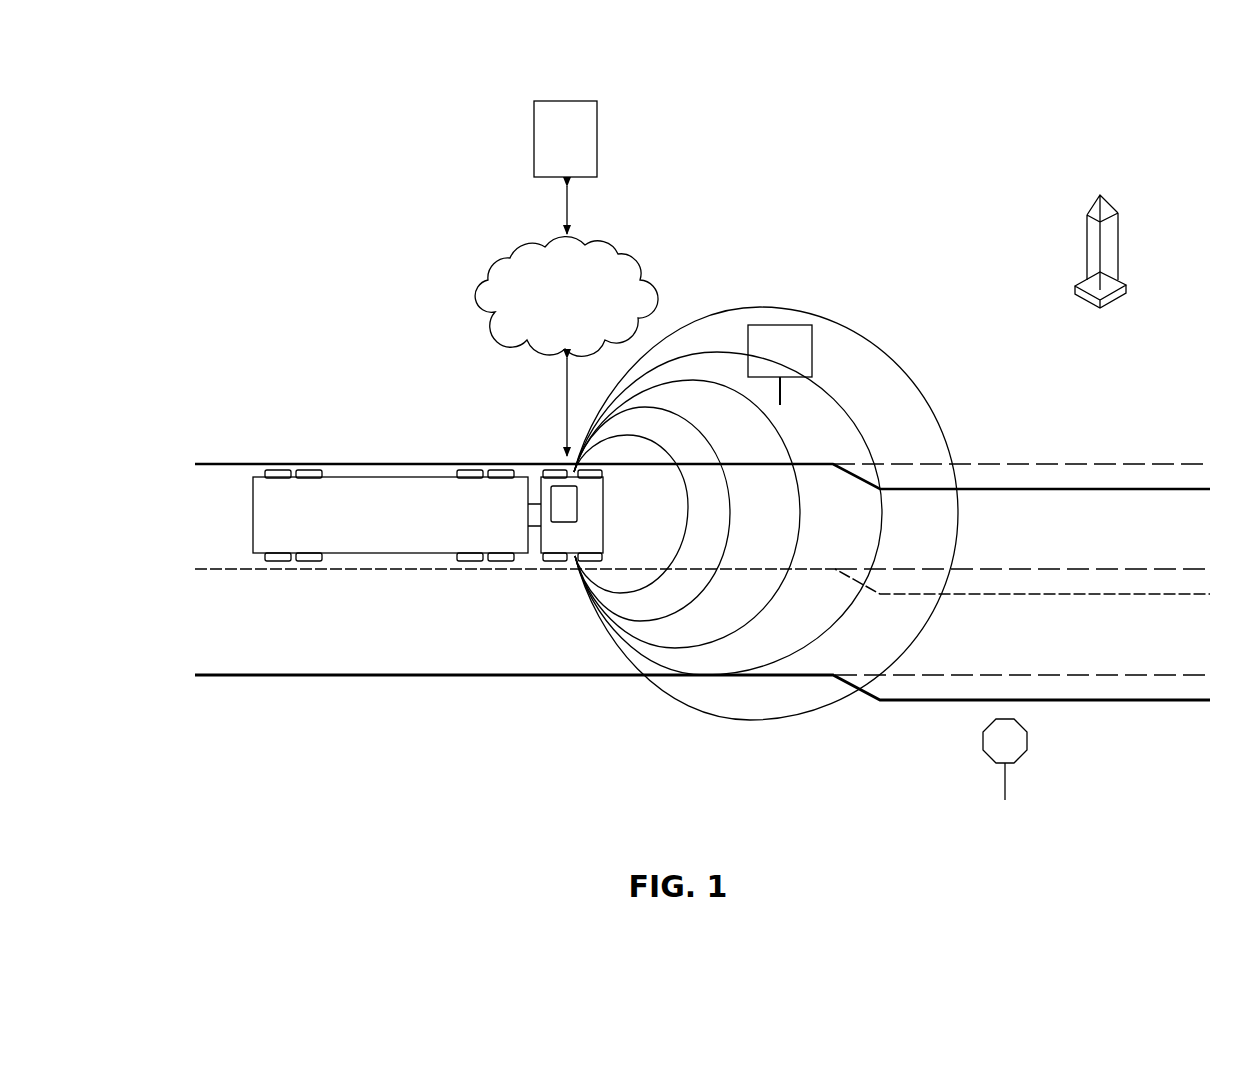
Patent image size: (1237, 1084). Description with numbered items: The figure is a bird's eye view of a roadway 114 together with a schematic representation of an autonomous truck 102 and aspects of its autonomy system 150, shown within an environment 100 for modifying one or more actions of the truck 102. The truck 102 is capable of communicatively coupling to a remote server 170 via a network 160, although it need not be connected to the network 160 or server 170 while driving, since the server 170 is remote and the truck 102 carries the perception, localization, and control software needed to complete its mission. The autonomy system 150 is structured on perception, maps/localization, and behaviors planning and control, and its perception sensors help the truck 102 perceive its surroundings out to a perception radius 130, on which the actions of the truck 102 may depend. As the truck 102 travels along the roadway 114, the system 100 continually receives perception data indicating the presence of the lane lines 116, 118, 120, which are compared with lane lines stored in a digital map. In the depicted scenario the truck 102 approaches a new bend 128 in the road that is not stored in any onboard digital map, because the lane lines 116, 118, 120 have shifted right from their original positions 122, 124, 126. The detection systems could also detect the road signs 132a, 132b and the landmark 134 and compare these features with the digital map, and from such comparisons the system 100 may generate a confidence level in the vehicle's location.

The environment 100 is at (268, 305).
The autonomous truck 102 is at (394, 522).
The roadway 114 is at (1000, 332).
The lane line 116 is at (1146, 489).
The lane line 118 is at (1160, 593).
The lane line 120 is at (1157, 698).
The original position 122 is at (1077, 463).
The original position 124 is at (1080, 571).
The original position 126 is at (1080, 673).
The bend 128 is at (892, 418).
The perception radius 130 is at (650, 688).
The road sign 132a is at (812, 352).
The road sign 132b is at (1028, 742).
The landmark 134 is at (1121, 242).
The autonomy system 150 is at (558, 487).
The network 160 is at (566, 297).
The remote server 170 is at (565, 139).